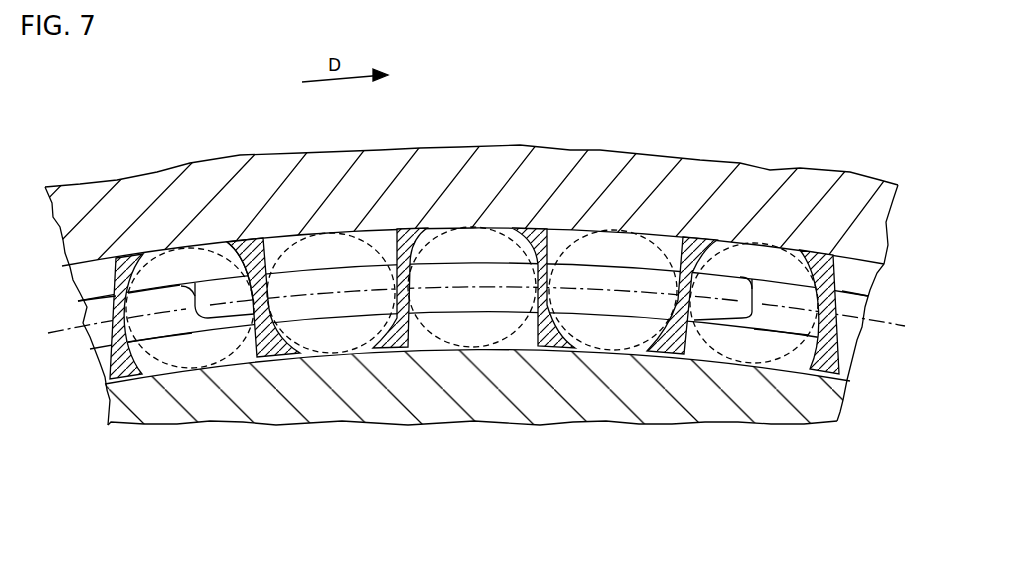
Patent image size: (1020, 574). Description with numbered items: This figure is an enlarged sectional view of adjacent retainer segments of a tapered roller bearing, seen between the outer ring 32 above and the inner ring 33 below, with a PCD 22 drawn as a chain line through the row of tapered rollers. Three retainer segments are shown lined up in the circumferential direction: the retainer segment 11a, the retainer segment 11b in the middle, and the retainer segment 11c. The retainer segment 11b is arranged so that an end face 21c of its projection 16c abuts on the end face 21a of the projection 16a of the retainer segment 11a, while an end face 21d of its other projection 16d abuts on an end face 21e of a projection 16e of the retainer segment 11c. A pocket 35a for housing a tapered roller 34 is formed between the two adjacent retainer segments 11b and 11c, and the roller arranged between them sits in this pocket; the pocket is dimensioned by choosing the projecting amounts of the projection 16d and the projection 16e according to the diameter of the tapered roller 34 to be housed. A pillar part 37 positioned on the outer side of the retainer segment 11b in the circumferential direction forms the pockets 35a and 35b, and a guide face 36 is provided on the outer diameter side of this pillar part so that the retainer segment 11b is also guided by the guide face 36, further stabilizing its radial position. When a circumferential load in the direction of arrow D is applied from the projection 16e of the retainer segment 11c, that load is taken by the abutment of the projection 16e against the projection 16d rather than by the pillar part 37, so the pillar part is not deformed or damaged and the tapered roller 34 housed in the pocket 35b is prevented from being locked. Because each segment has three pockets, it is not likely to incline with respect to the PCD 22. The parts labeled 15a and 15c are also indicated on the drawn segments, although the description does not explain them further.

The retainer segment 11a is at (845, 300).
The retainer segment 11b is at (442, 297).
The retainer segment 11c is at (102, 310).
The first annular portion end 15a is at (834, 376).
The first annular portion 15c is at (500, 297).
The projection 16a is at (787, 322).
The projection 16c is at (721, 305).
The projection 16d is at (223, 316).
The projection 16e is at (162, 325).
The end face 21a is at (745, 282).
The end face 21c is at (748, 320).
The end face 21d is at (183, 298).
The end face 21e is at (212, 313).
The PCD 22 is at (883, 323).
The outer ring 32 is at (693, 197).
The inner ring 33 is at (638, 398).
The tapered roller 34 is at (238, 336).
The pocket 35a is at (272, 322).
The pocket 35b is at (347, 334).
The guide face 36 is at (221, 278).
The pillar part 37 is at (253, 282).